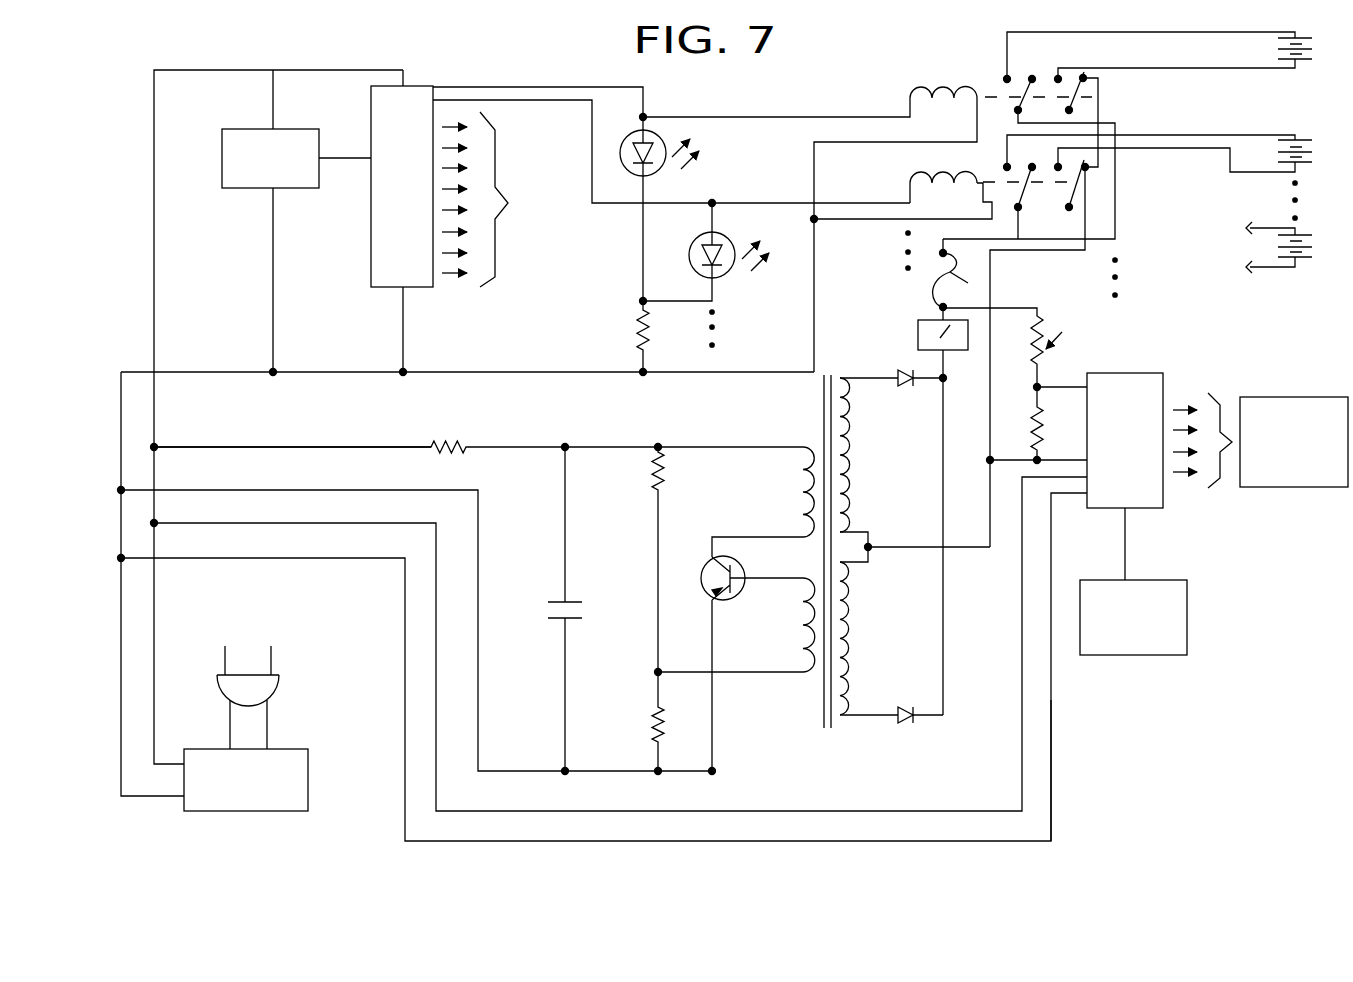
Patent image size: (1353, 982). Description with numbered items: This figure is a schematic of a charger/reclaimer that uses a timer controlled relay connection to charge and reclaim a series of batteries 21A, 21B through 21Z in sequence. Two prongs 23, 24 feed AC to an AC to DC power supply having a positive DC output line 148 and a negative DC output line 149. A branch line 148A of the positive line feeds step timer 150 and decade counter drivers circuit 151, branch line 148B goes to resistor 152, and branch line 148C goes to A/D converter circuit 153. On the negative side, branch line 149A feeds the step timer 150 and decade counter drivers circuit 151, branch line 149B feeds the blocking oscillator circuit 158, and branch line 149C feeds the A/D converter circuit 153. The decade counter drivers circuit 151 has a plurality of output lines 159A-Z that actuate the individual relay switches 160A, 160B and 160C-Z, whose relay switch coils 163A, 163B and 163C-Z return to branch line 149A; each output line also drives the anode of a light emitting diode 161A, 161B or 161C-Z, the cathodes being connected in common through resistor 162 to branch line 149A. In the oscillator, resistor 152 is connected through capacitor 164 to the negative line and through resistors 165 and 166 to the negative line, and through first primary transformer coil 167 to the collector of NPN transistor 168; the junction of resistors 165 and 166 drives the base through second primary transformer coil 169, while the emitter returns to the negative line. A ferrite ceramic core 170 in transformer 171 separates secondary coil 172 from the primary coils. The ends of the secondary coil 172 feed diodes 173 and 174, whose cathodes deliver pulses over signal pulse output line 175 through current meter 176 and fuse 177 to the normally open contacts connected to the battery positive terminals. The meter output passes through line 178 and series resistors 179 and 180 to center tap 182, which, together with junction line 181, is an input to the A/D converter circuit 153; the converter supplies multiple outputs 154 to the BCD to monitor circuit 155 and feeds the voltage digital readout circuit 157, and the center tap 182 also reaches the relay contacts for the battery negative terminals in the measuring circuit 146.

The battery 21A is at (1278, 55).
The battery 21B is at (1278, 138).
The battery 21Z is at (1278, 255).
The prong 23 is at (224, 646).
The prong 24 is at (273, 656).
The voltage measuring circuit 146 is at (1060, 737).
The positive DC output line 148 is at (153, 642).
The branch line 148A is at (155, 252).
The branch line 148B is at (292, 449).
The branch line 148C is at (942, 811).
The negative DC output line 149 is at (137, 798).
The branch line 149A is at (196, 371).
The branch line 149B is at (482, 548).
The branch line 149C is at (1052, 798).
The step timer 150 is at (300, 128).
The decade counter drivers circuit 151 is at (422, 85).
The resistor 152 is at (440, 446).
The A/D converter circuit 153 is at (1133, 372).
The outputs 154 is at (1195, 385).
The BCD to monitor circuit 155 is at (1297, 488).
The voltage digital readout circuit 157 is at (1190, 633).
The blocking oscillator circuit 158 is at (746, 694).
The output lines 159A-Z is at (443, 290).
The relay switch 160A is at (1073, 98).
The relay switch 160B is at (1077, 193).
The relay switches 160C-Z is at (1132, 282).
The light emitting diode 161A is at (628, 143).
The light emitting diode 161B is at (688, 255).
The light emitting diodes 161C-Z is at (710, 338).
The resistor 162 is at (640, 328).
The relay switch coil 163A is at (938, 92).
The relay switch coil 163B is at (923, 180).
The relay switch coils 163C-Z is at (887, 264).
The capacitor 164 is at (560, 602).
The resistor 165 is at (655, 473).
The resistor 166 is at (655, 723).
The first primary transformer coil 167 is at (803, 477).
The NPN transistor 168 is at (712, 594).
The second primary transformer coil 169 is at (803, 608).
The ferrite ceramic core 170 is at (823, 410).
The transformer 171 is at (836, 740).
The secondary coil 172 is at (853, 440).
The diode 173 is at (898, 373).
The diode 174 is at (903, 710).
The signal pulse output line 175 is at (945, 455).
The current meter 176 is at (958, 350).
The fuse 177 is at (958, 275).
The line 178 is at (1030, 305).
The resistor 179 is at (1069, 334).
The resistor 180 is at (1033, 437).
The junction line 181 is at (1065, 385).
The center tap 182 is at (868, 547).